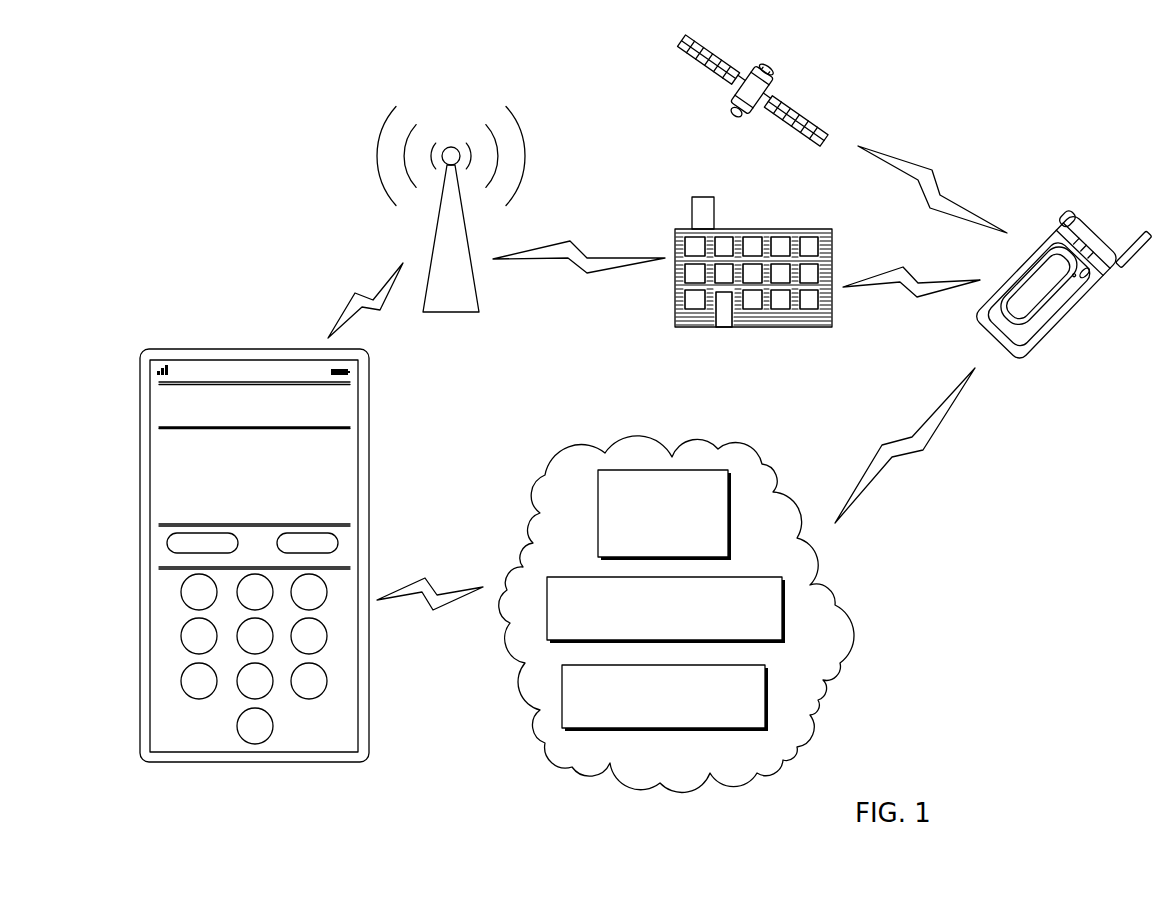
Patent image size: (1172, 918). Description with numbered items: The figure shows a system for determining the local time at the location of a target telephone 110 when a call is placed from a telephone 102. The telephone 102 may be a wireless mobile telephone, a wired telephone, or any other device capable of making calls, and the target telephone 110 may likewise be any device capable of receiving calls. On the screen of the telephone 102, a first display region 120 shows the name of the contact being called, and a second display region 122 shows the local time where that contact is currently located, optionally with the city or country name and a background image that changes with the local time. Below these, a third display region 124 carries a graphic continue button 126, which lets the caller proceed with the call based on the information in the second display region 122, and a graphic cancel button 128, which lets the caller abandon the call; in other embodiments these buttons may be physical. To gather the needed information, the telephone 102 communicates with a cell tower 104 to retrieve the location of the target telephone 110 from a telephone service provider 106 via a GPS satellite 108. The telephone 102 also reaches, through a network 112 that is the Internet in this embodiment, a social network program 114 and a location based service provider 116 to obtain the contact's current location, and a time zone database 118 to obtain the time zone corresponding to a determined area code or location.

The telephone 102 is at (231, 341).
The cell tower 104 is at (438, 227).
The telephone service provider 106 is at (672, 214).
The global positioning system (GPS) satellite 108 is at (795, 78).
The target telephone 110 is at (1093, 325).
The network 112 is at (540, 762).
The social network program 114 is at (735, 500).
The location based service provider 116 is at (787, 610).
The time zone database 118 is at (768, 688).
The first display region 120 is at (359, 405).
The second display region 122 is at (347, 467).
The third display region 124 is at (360, 535).
The continue button 126 is at (167, 543).
The cancel button 128 is at (338, 548).